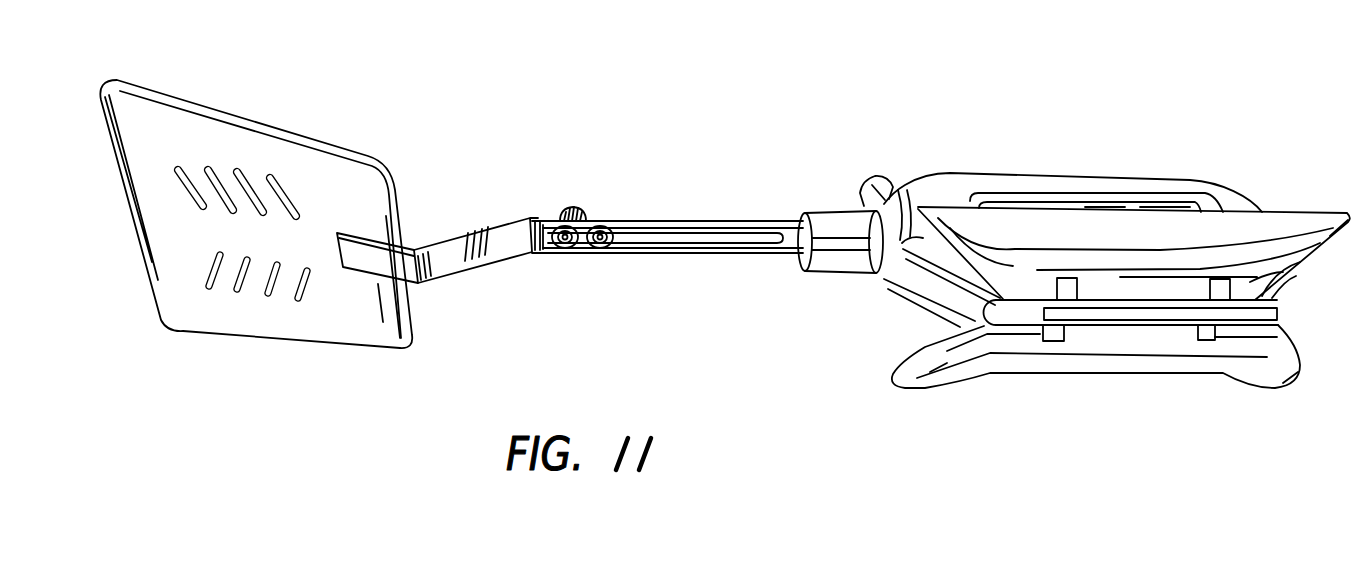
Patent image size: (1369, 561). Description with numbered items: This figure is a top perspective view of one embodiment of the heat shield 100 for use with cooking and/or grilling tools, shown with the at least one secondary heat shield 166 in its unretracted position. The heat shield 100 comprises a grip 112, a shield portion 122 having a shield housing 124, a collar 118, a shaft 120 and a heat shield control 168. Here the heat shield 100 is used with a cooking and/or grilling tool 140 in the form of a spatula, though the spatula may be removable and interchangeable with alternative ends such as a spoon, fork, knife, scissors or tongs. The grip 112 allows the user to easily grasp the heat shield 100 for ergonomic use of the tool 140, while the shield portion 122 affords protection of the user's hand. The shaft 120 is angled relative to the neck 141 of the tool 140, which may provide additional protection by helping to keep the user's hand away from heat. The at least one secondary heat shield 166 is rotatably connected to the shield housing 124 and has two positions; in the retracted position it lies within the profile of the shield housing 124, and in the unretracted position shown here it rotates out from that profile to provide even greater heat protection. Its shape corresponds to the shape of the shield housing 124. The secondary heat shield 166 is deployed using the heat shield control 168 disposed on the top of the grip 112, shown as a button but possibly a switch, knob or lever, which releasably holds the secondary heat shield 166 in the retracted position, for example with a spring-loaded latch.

The heat shield 100 is at (1262, 164).
The grip 112 is at (1097, 180).
The collar 118 is at (817, 212).
The shaft 120 is at (672, 221).
The shield portion 122 is at (1195, 384).
The shield housing 124 is at (942, 288).
The cooking and/or grilling tool 140 is at (350, 131).
The neck 141 is at (482, 237).
The secondary heat shield 166 is at (1323, 231).
The heat shield control 168 is at (877, 176).